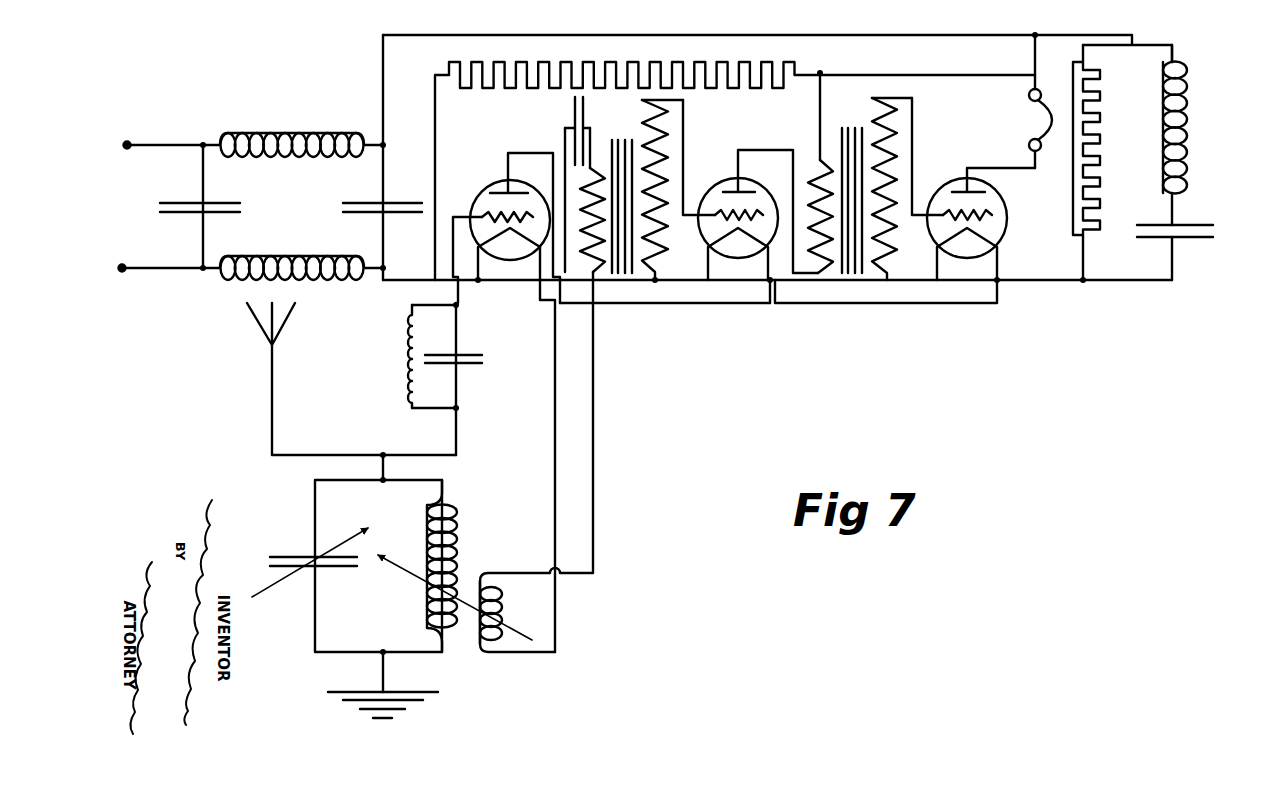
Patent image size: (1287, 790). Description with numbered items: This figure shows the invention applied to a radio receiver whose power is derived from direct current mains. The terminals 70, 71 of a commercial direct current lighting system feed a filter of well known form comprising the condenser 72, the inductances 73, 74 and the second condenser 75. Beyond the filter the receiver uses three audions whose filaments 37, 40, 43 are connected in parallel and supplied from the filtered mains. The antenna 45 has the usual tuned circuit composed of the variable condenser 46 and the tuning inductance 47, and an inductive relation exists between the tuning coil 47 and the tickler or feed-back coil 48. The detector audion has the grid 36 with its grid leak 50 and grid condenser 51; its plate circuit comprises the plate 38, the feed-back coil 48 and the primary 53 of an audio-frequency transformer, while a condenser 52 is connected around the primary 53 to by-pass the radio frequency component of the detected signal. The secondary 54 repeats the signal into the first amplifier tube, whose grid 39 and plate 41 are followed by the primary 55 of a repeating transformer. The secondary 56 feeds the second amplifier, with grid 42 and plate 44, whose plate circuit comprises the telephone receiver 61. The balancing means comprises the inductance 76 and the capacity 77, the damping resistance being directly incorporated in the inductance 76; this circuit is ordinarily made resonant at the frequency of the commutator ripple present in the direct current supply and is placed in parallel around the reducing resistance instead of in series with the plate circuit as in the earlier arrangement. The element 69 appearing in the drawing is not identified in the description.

The grid 36 is at (492, 211).
The audion filament 37 is at (532, 246).
The plate 38 is at (542, 177).
The grid 39 is at (717, 210).
The audion filament 40 is at (760, 248).
The plate 41 is at (775, 175).
The grid 42 is at (946, 210).
The audion filament 43 is at (982, 248).
The plate 44 is at (980, 190).
The antenna 45 is at (265, 334).
The variable condenser 46 is at (300, 553).
The tuning coil 47 is at (494, 523).
The feed-back coil 48 is at (520, 596).
The grid leak 50 is at (408, 358).
The grid condenser 51 is at (488, 328).
The condenser 52 is at (572, 113).
The primary of audio-frequency transformer 53 is at (598, 158).
The secondary of audio-frequency transformer 54 is at (668, 130).
The primary of repeating transformer 55 is at (820, 158).
The secondary of repeating transformer 56 is at (893, 133).
The telephone receiver 61 is at (1026, 101).
The battery 69 is at (1128, 155).
The terminal 70 is at (148, 133).
The terminal 71 is at (143, 282).
The condenser 72 is at (157, 202).
The inductance 73 is at (268, 132).
The inductance 74 is at (264, 255).
The second condenser 75 is at (370, 183).
The inductance 76 is at (1222, 115).
The capacity 77 is at (1252, 235).